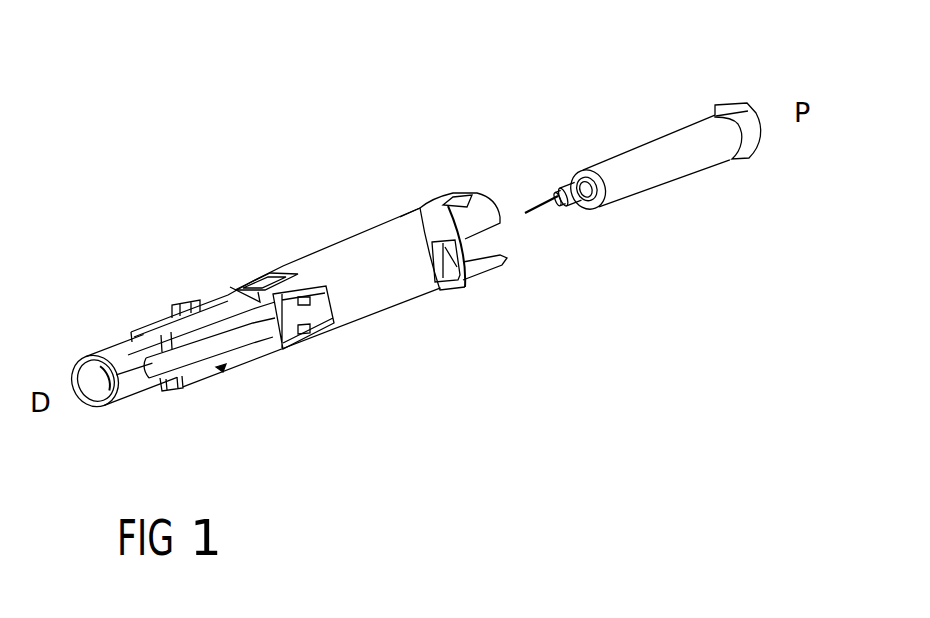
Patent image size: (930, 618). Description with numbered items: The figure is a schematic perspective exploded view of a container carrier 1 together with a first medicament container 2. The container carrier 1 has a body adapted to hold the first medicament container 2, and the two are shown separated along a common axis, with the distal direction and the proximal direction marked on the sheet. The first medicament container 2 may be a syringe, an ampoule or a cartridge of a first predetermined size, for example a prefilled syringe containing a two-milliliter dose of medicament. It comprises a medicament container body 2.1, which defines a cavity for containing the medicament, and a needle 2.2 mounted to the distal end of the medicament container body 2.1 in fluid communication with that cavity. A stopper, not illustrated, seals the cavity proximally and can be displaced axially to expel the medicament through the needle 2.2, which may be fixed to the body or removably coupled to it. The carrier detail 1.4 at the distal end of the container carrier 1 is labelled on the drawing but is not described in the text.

The container carrier 1 is at (260, 244).
The nozzle / distal outlet 1.4 is at (82, 356).
The first medicament container 2 is at (633, 127).
The medicament container body 2.1 is at (666, 160).
The needle 2.2 is at (537, 213).